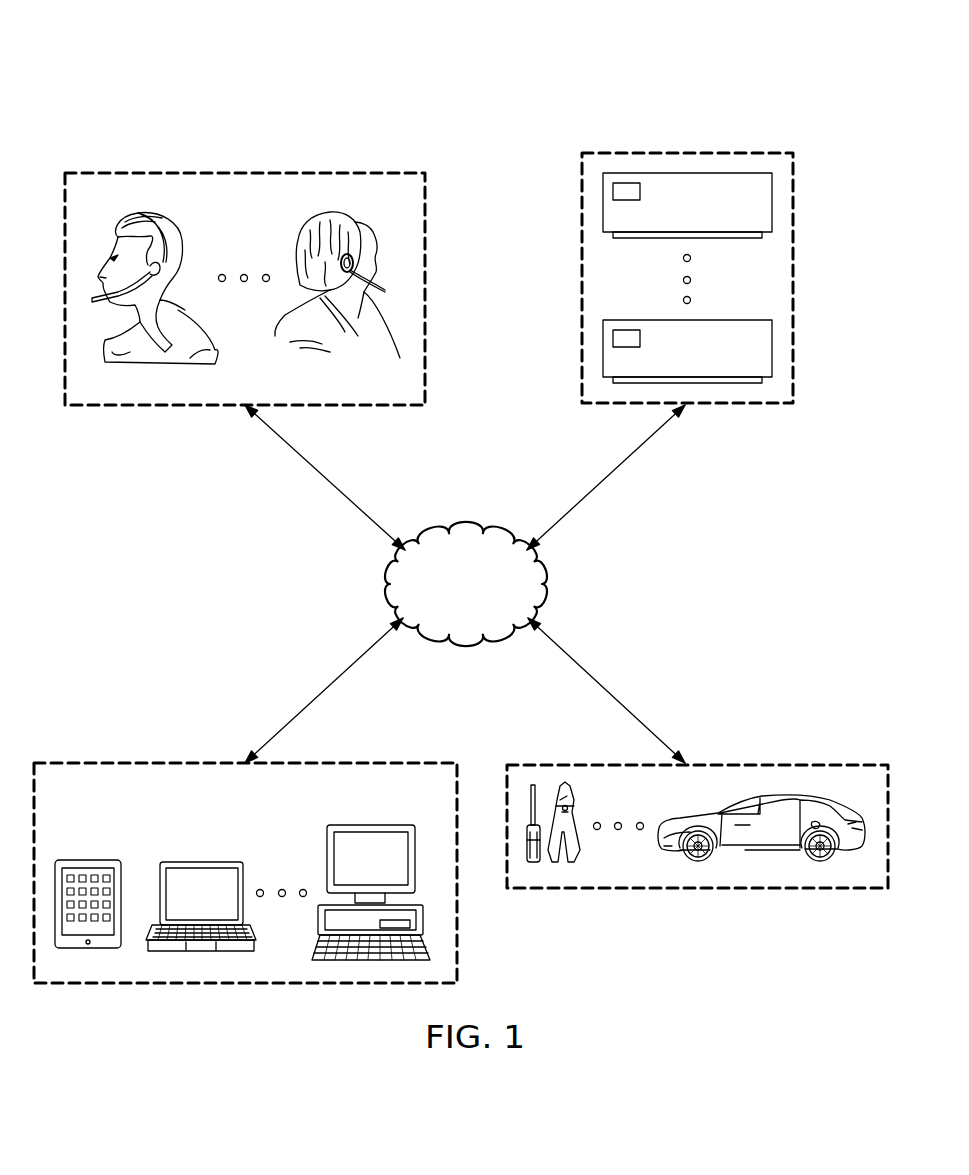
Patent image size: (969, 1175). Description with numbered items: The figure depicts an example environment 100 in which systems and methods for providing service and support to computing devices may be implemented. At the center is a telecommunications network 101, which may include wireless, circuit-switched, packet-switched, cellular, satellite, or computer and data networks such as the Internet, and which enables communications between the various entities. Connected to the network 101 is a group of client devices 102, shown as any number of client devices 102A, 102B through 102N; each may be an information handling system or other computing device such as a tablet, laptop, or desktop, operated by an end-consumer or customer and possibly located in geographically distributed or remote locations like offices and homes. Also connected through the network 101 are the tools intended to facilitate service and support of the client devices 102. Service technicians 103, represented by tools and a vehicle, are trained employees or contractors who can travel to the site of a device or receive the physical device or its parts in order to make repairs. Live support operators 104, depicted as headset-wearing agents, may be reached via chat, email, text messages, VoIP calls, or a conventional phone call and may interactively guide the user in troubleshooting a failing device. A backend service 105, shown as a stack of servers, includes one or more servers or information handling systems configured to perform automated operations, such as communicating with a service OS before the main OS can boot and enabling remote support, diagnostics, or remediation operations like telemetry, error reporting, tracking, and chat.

The environment 100 is at (333, 77).
The network 101 is at (470, 532).
The client devices 102 is at (243, 985).
The client device 102A is at (90, 860).
The client device 102B is at (200, 862).
The client device 102N is at (370, 825).
The service technicians 103 is at (710, 890).
The live support operators 104 is at (243, 173).
The backend service 105 is at (688, 153).